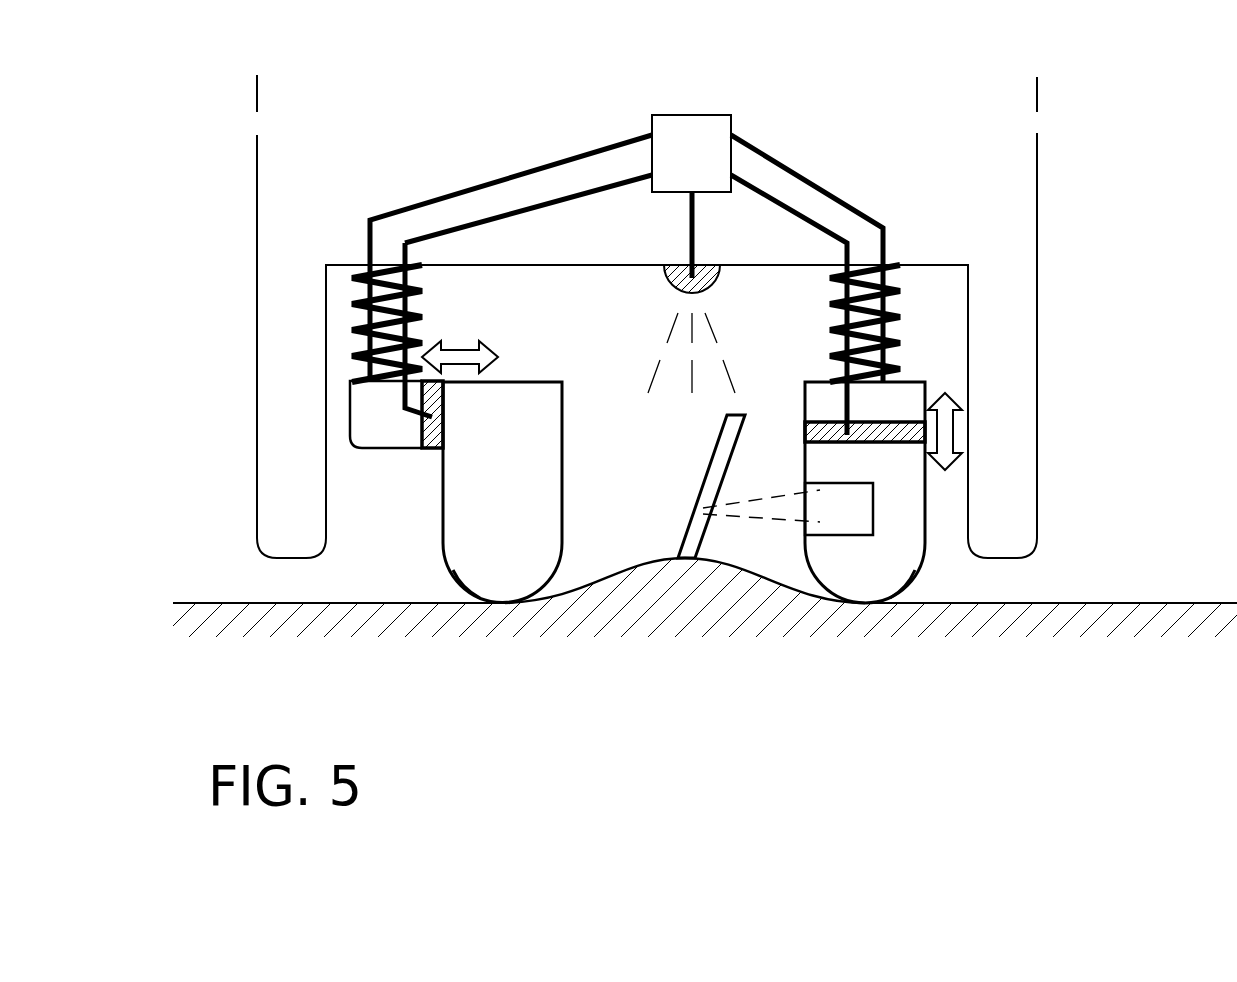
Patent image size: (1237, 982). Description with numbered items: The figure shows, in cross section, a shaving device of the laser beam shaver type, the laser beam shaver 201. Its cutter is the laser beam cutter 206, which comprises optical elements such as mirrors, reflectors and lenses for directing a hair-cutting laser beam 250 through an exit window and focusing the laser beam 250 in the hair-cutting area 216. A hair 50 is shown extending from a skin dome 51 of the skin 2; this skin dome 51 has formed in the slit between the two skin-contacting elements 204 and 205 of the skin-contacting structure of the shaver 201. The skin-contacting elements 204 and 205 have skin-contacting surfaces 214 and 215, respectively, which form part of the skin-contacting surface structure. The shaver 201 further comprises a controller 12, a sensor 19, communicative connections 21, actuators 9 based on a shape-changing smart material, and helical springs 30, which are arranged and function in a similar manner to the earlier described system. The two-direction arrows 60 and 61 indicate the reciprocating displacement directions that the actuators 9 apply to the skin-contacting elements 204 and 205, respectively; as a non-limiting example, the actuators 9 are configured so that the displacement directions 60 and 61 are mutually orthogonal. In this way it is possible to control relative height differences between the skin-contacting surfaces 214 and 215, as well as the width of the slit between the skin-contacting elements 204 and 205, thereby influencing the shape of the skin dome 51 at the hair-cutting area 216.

The laser beam shaver 201 is at (1110, 134).
The skin 2 is at (579, 707).
The actuator 9 is at (433, 437).
The controller 12 is at (677, 164).
The sensor 19 is at (667, 282).
The communicative connections 21 is at (533, 205).
The helical springs 30 is at (352, 329).
The hair 50 is at (721, 458).
The skin dome 51 is at (727, 570).
The reciprocating displacement direction 60 is at (460, 350).
The reciprocating displacement direction 61 is at (953, 432).
The skin-contacting element 204 is at (427, 578).
The skin-contacting element 205 is at (941, 578).
The laser beam cutter 206 is at (840, 509).
The skin-contacting surface 214 is at (462, 588).
The skin-contacting surface 215 is at (907, 588).
The hair-cutting area 216 is at (668, 512).
The hair-cutting laser beam 250 is at (768, 509).